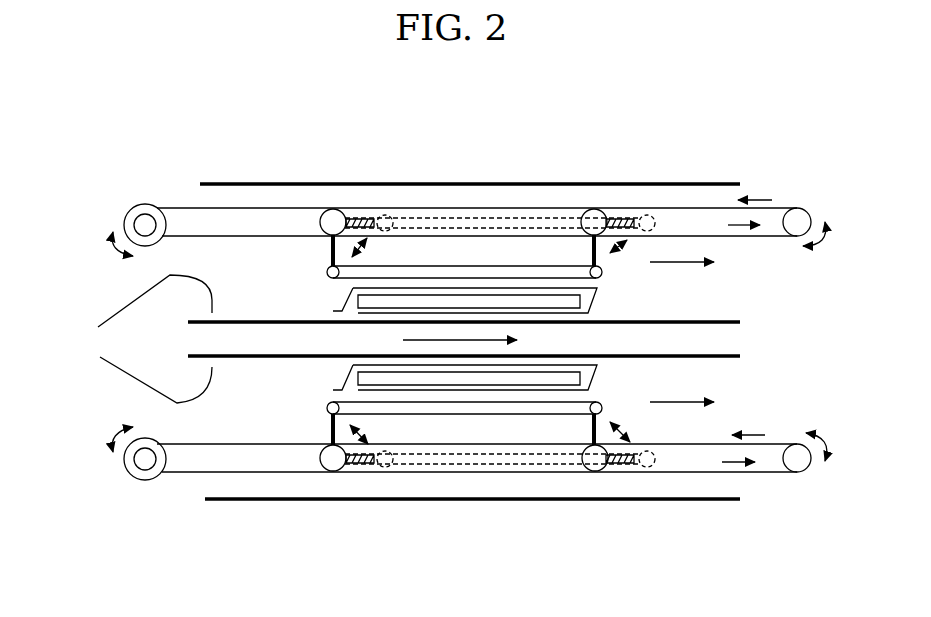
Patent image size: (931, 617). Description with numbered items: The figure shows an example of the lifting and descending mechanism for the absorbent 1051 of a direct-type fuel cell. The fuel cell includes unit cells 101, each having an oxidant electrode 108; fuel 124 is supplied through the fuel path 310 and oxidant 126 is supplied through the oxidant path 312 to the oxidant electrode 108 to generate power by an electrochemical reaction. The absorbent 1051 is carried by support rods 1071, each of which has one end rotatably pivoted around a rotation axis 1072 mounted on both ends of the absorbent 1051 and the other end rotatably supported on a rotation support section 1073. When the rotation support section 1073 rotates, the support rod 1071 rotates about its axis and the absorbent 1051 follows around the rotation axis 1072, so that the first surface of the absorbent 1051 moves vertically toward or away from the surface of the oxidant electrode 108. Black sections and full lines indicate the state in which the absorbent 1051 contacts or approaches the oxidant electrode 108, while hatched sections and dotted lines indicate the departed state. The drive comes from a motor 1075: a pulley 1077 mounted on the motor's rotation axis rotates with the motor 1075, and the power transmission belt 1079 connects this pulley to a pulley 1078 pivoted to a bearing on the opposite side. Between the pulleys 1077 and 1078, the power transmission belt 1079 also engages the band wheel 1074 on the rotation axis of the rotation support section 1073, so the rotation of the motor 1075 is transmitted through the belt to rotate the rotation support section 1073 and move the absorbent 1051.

The unit cell 101 is at (322, 301).
The oxidant electrode 108 is at (430, 288).
The fuel 124 is at (490, 340).
The oxidant 126 is at (708, 333).
The fuel path 310 is at (740, 357).
The oxidant path 312 is at (137, 339).
The absorbent 1051 is at (513, 273).
The support rod 1071 is at (322, 218).
The rotation axis 1072 is at (326, 266).
The rotation support section 1073 is at (335, 209).
The band wheel 1074 is at (346, 218).
The motor 1075 is at (135, 205).
The pulley 1077 is at (135, 214).
The pulley 1078 is at (799, 208).
The power transmission belt 1079 is at (180, 208).